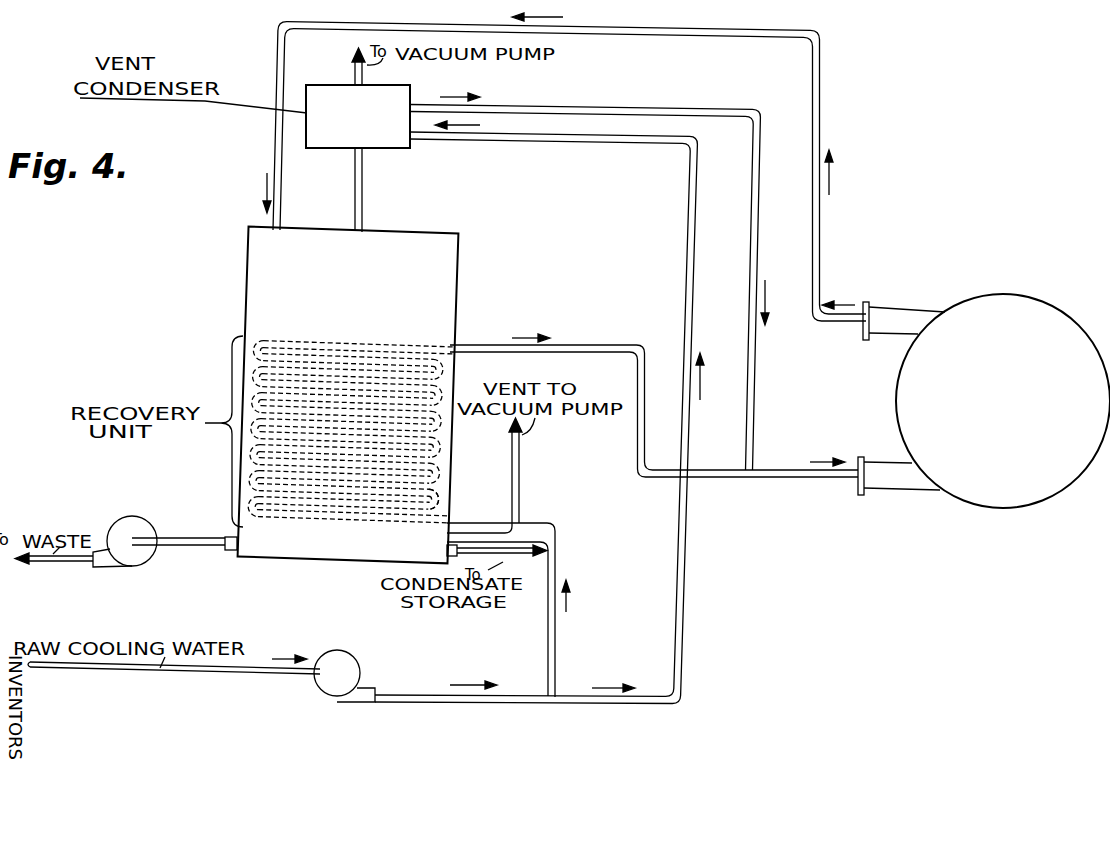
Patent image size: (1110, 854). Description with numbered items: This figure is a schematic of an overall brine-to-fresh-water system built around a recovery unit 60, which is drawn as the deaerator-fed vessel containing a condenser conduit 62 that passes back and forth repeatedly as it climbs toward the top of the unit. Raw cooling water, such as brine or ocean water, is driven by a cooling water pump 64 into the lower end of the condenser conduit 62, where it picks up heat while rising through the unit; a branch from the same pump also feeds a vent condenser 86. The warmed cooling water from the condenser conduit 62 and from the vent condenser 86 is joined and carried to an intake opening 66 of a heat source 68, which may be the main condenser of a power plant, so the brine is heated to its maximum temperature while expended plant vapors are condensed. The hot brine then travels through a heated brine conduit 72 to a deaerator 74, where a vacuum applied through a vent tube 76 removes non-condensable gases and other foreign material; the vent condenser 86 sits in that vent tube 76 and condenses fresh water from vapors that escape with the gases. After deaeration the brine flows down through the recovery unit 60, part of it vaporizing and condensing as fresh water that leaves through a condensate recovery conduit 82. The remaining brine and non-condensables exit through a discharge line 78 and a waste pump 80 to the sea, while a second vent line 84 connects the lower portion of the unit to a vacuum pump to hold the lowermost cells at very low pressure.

The recovery unit 60 is at (240, 340).
The condenser conduit 62 is at (441, 490).
The cooling water pump 64 is at (335, 655).
The intake opening 66 is at (884, 490).
The heat source 68 is at (897, 389).
The heated brine conduit 72 is at (600, 38).
The deaerator 74 is at (250, 266).
The vent tube 76 is at (355, 188).
The discharge line 78 is at (178, 540).
The waste pump 80 is at (132, 517).
The condensate recovery conduit 82 is at (523, 547).
The second vent line 84 is at (522, 460).
The vent condenser 86 is at (332, 86).